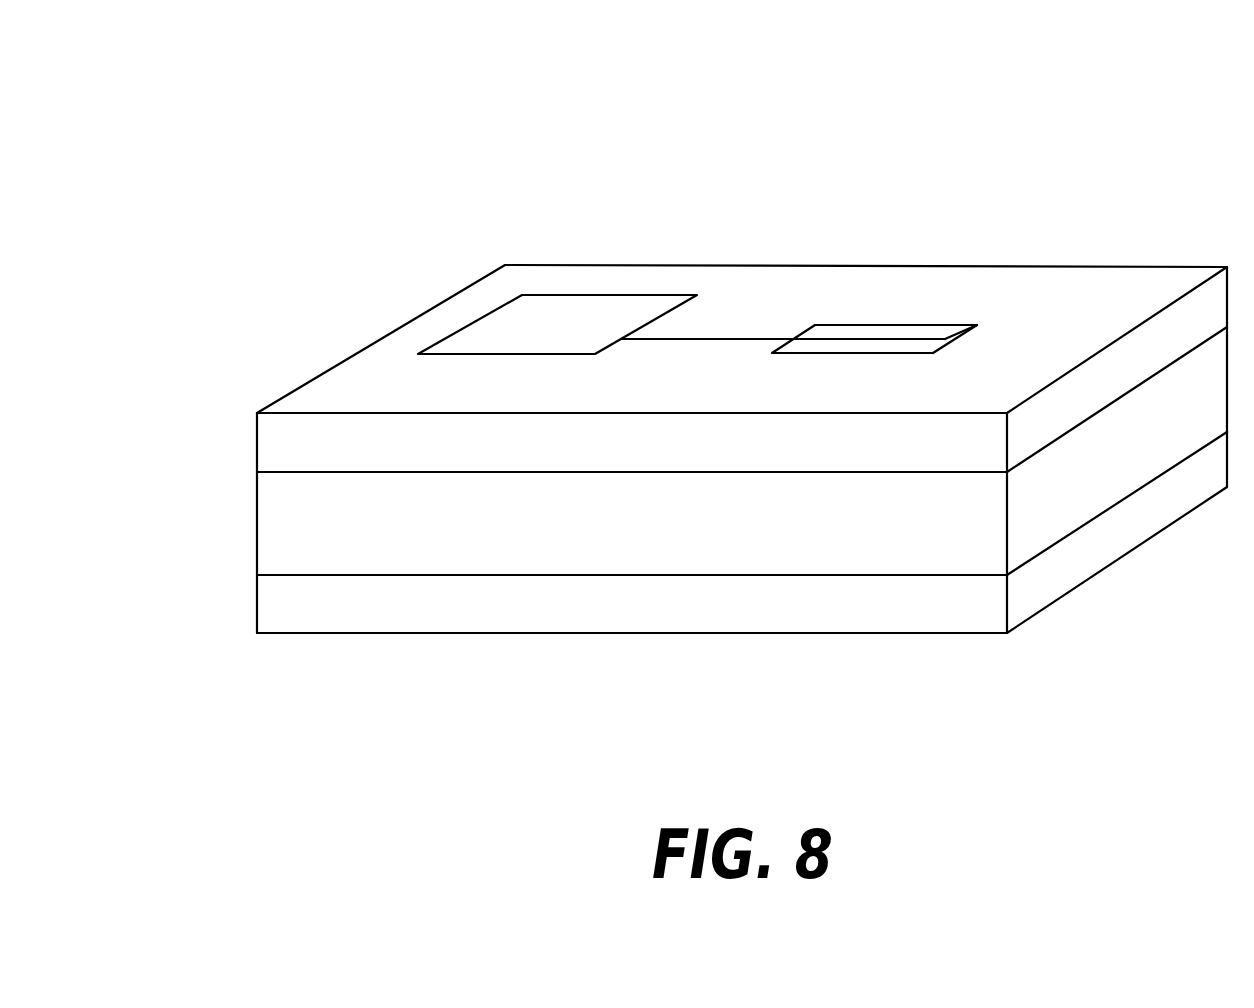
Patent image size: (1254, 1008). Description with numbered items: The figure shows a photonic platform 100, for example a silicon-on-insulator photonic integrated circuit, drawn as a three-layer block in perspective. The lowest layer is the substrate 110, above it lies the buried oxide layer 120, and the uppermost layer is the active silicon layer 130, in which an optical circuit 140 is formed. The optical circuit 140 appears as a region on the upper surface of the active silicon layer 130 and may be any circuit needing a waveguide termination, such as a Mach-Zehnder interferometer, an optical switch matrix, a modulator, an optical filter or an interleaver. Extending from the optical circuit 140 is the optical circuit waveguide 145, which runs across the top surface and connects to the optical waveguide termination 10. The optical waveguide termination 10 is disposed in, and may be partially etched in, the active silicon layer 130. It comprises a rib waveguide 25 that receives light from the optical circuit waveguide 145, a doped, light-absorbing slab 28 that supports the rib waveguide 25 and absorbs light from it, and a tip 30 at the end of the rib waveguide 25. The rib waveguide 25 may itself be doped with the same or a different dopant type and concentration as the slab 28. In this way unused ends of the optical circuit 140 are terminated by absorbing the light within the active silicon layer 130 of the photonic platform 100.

The photonic platform 100 is at (341, 146).
The substrate 110 is at (273, 620).
The buried oxide layer 120 is at (273, 532).
The active silicon layer 130 is at (273, 458).
The optical circuit 140 is at (597, 325).
The optical circuit waveguide 145 is at (743, 339).
The optical waveguide termination 10 is at (943, 261).
The rib waveguide 25 is at (848, 340).
The tip 30 is at (937, 340).
The doped, light-absorbing slab 28 is at (950, 340).